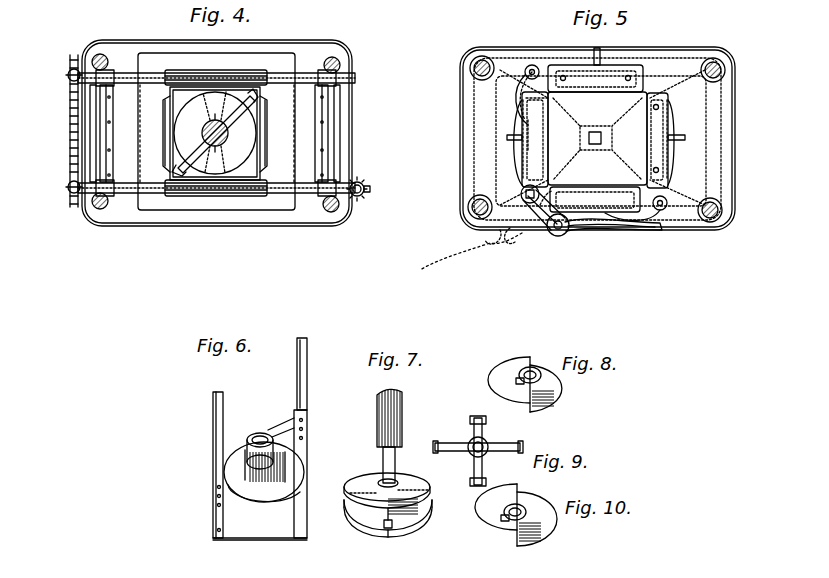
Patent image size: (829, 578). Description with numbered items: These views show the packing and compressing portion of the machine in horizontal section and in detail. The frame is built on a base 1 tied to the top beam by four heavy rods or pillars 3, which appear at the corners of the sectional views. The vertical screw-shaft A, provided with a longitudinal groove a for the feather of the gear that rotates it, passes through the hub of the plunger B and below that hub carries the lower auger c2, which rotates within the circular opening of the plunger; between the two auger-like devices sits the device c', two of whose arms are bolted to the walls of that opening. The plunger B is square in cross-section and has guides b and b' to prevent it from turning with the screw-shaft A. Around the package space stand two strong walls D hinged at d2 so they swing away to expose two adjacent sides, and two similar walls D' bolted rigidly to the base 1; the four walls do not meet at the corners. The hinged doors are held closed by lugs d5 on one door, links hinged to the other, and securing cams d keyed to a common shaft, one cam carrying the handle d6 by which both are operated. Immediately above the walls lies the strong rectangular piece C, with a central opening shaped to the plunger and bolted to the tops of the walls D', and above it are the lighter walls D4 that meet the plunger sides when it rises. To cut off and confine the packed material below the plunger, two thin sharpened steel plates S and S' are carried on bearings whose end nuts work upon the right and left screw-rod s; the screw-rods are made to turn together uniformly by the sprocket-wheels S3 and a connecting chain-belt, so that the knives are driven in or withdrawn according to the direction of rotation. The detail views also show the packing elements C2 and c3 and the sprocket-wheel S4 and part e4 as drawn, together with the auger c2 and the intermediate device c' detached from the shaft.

In FIG. 4, the base 1 is at (158, 37).
In FIG. 5, the base 1 is at (462, 128).
In FIG. 4, the rods or pillars 3 is at (99, 56).
In FIG. 5, the rods or pillars 3 is at (485, 60).
In FIG. 4, the rectangular piece C is at (282, 60).
In FIG. 7, the rectangular piece C is at (387, 490).
In FIG. 4, the right and left screw-rod s is at (148, 78).
In FIG. 4, the knife plate S' is at (115, 133).
In FIG. 4, the knife plate S is at (317, 133).
In FIG. 4, the sprocket-wheel S3 is at (66, 131).
In FIG. 4, the sprocket wheel S4 is at (360, 184).
In FIG. 4, the upper walls D4 is at (172, 124).
In FIG. 4, the hinged wall D is at (272, 134).
In FIG. 5, the hinged wall D is at (594, 152).
In FIG. 5, the fixed wall D' is at (595, 78).
In FIG. 4, the plunger B is at (238, 108).
In FIG. 6, the plunger B is at (264, 455).
In FIG. 4, the screw-shaft A is at (226, 135).
In FIG. 7, the screw-shaft A is at (389, 436).
In FIG. 4, the longitudinal groove a is at (214, 139).
In FIG. 4, the guide b is at (213, 137).
In FIG. 6, the guide b is at (260, 466).
In FIG. 4, the guide b' is at (253, 101).
In FIG. 6, the guide b' is at (287, 438).
In FIG. 5, the hinge d2 is at (538, 72).
In FIG. 5, the lug d5 is at (532, 204).
In FIG. 5, the lever pivot e4 is at (562, 236).
In FIG. 5, the handle d6 is at (650, 228).
In FIG. 5, the cam d is at (588, 232).
In FIG. 7, the lower disk C2 is at (388, 517).
In FIG. 7, the pin c3 is at (384, 527).
In FIG. 8, the auger c2 is at (525, 384).
In FIG. 10, the auger c2 is at (516, 515).
In FIG. 9, the intermediate device c' is at (478, 451).